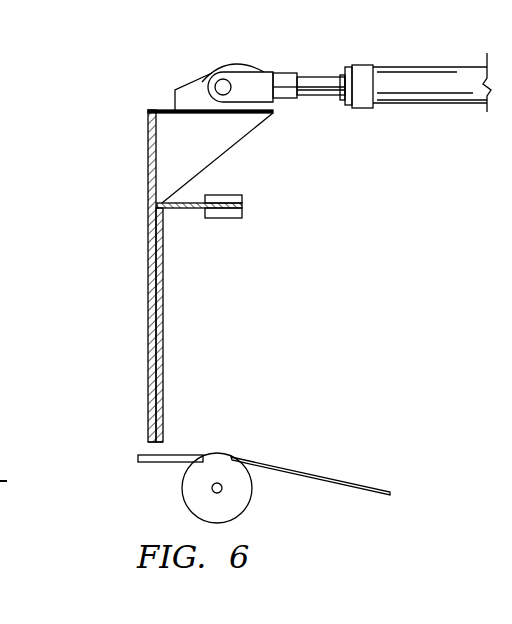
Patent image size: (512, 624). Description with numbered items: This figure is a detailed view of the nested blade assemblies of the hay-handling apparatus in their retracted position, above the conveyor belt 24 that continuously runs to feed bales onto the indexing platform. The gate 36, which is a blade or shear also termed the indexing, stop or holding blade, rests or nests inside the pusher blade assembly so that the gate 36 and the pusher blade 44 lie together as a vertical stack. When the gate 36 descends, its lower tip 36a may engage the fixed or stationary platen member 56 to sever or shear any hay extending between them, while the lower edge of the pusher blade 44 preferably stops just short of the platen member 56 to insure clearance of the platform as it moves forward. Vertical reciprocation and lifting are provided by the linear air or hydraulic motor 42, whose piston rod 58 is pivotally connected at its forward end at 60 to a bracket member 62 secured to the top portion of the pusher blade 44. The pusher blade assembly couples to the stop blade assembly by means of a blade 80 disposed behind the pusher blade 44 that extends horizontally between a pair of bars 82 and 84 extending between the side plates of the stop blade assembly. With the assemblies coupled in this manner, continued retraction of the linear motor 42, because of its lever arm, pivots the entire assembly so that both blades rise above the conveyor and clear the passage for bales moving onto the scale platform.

The belt 24 is at (284, 470).
The gate 36 is at (163, 302).
The lower tip 36a is at (180, 442).
The linear air or hydraulic motor 42 is at (437, 78).
The pusher blade 44 is at (150, 280).
The platen member 56 is at (137, 458).
The piston rod 58 is at (313, 82).
The pivotal connection 60 is at (226, 84).
The bracket member 62 is at (192, 90).
The blade 80 is at (242, 205).
The bar 82 is at (231, 195).
The bar 84 is at (231, 218).